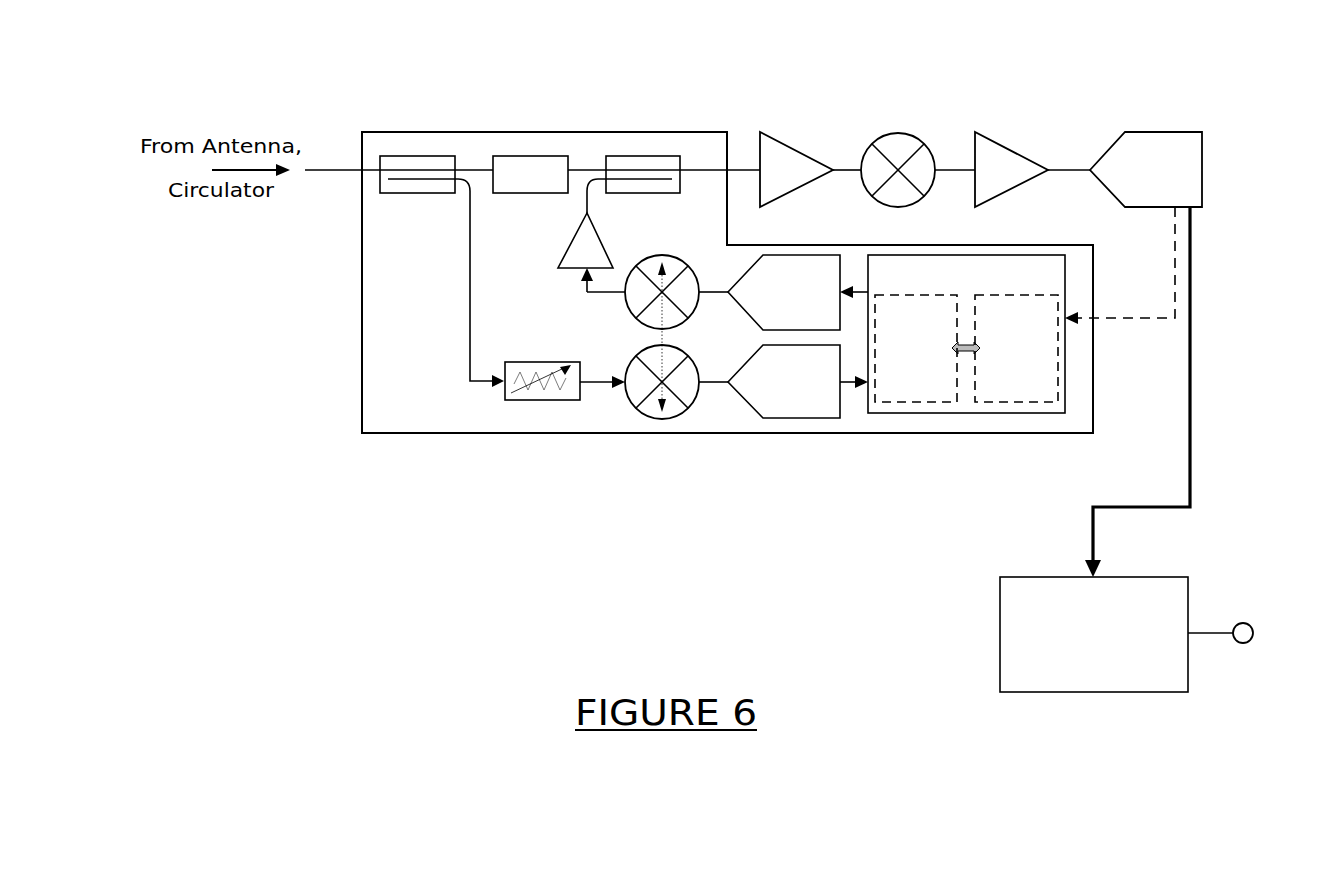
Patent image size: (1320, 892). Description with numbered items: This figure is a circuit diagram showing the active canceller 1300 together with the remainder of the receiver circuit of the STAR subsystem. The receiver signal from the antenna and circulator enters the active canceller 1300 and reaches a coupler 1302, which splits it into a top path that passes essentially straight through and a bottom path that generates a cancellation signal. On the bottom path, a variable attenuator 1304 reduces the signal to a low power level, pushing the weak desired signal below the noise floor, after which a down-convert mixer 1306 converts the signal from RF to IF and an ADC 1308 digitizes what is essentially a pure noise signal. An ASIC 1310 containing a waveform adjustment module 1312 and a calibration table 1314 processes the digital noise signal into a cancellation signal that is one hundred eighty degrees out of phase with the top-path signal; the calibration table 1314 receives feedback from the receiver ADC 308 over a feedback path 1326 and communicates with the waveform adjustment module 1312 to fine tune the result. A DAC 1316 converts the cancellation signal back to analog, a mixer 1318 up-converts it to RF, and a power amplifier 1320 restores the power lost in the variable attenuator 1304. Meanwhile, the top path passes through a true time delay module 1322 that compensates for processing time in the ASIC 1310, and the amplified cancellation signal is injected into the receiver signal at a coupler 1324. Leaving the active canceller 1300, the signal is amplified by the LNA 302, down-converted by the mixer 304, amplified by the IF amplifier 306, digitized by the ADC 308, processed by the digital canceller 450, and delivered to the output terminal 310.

The active canceller 1300 is at (485, 434).
The coupler 1302 is at (422, 153).
The true time delay module 1322 is at (532, 153).
The coupler 1324 is at (642, 153).
The power amplifier 1320 is at (575, 232).
The mixer 1318 is at (636, 316).
The DAC 1316 is at (745, 266).
The variable attenuator 1304 is at (528, 400).
The down-convert mixer 1306 is at (662, 420).
The ADC 1308 is at (792, 419).
The application specific integrated circuit 1310 is at (960, 414).
The waveform adjustment module 1312 is at (910, 403).
The calibration table 1314 is at (1007, 403).
The low noise amplifier 302 is at (790, 140).
The down-convert mixer 304 is at (922, 145).
The IF amplifier 306 is at (980, 132).
The ADC 308 is at (1110, 150).
The feedback path 1326 is at (1175, 232).
The digital canceller 450 is at (1075, 674).
The output terminal 310 is at (1243, 645).